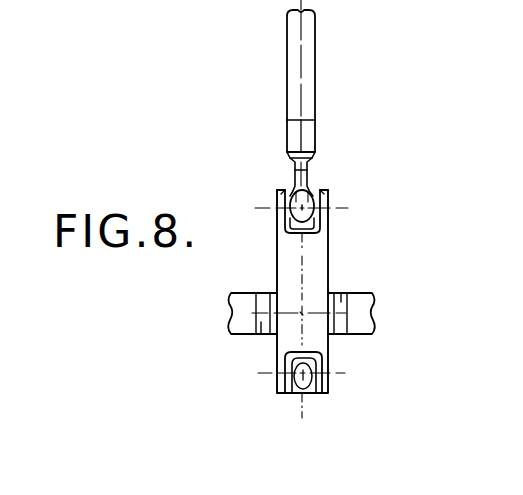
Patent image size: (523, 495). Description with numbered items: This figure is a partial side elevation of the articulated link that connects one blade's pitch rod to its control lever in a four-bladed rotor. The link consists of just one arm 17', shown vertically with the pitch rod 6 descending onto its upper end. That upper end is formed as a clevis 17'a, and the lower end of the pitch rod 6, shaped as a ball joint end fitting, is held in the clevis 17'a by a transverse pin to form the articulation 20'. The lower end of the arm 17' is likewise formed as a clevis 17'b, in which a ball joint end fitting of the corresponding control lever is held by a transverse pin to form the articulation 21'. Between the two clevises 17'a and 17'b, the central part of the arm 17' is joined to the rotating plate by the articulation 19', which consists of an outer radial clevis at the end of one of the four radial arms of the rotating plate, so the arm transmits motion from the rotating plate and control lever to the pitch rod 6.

The pitch rod 6 is at (303, 66).
The arm 17' is at (272, 291).
The clevis 17'a is at (265, 190).
The clevis 17'b is at (341, 378).
The articulation 19' is at (323, 274).
The articulation 20' is at (326, 194).
The articulation 21' is at (334, 405).